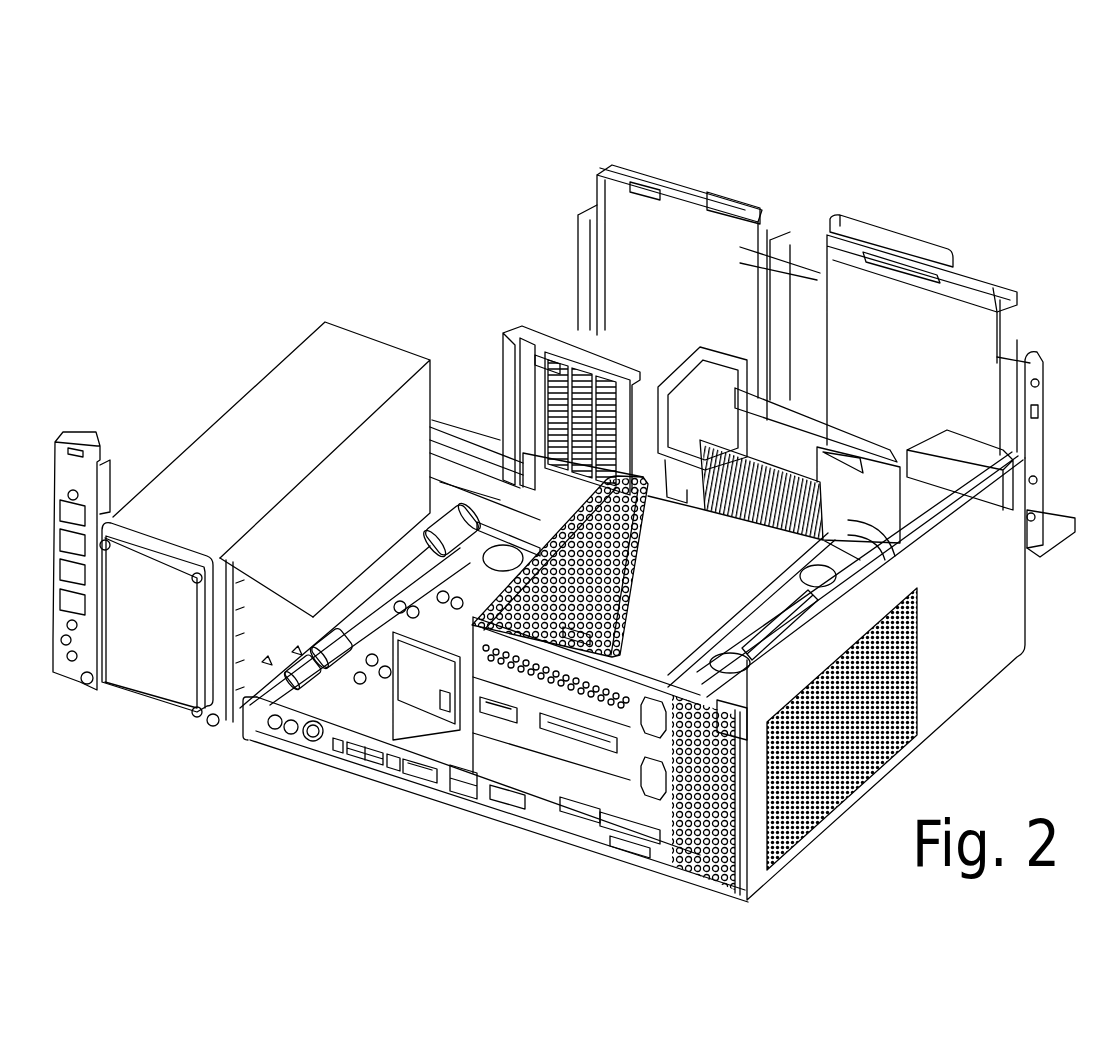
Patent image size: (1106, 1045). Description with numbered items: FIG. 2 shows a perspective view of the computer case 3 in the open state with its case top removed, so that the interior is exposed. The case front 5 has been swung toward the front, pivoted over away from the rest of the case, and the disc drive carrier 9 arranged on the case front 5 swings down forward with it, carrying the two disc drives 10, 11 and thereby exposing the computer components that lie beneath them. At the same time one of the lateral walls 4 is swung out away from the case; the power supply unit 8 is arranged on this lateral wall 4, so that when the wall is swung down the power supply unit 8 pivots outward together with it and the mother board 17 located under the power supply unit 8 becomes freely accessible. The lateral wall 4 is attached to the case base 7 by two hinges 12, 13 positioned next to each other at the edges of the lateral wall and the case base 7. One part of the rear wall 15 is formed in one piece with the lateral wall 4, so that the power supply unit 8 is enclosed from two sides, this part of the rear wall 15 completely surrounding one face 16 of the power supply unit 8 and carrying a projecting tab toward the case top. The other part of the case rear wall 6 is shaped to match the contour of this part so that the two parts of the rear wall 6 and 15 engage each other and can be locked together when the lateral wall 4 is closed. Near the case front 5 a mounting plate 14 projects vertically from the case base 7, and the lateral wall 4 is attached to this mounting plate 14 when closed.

The chassis 3 is at (972, 628).
The lateral wall 4 is at (438, 483).
The case front 5 is at (1056, 513).
The case rear wall part 6 is at (703, 837).
The case base 7 is at (515, 520).
The power supply unit 8 is at (270, 430).
The disc drive carrier 9 is at (850, 228).
The disc drive 10 is at (940, 327).
The disc drive 11 is at (655, 240).
The hinge 12 is at (310, 620).
The hinge 13 is at (455, 523).
The mounting plate 14 is at (545, 335).
The rear wall part 15 is at (93, 575).
The face of the power supply unit 16 is at (145, 632).
The mother board 17 is at (423, 590).